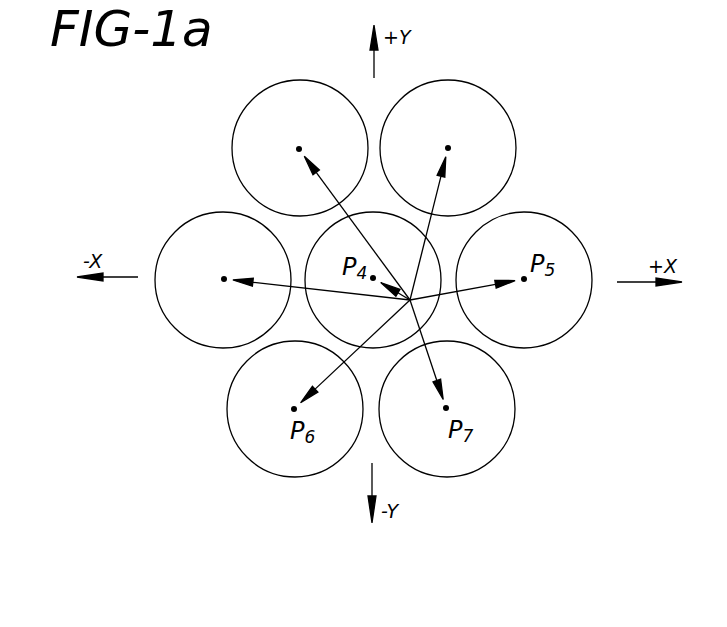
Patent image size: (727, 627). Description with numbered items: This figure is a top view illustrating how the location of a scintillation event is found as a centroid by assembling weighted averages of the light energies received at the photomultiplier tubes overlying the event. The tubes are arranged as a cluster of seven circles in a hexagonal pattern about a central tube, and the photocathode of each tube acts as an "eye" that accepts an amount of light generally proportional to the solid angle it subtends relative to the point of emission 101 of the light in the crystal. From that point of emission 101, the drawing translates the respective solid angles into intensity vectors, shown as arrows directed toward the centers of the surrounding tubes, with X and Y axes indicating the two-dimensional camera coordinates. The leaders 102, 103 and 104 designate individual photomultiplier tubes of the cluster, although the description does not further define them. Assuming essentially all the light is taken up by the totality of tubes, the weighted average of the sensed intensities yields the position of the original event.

The point of emission 101 is at (410, 300).
The photomultiplier tube 102 is at (432, 223).
The photomultiplier tube 103 is at (320, 216).
The photomultiplier tube 104 is at (298, 292).